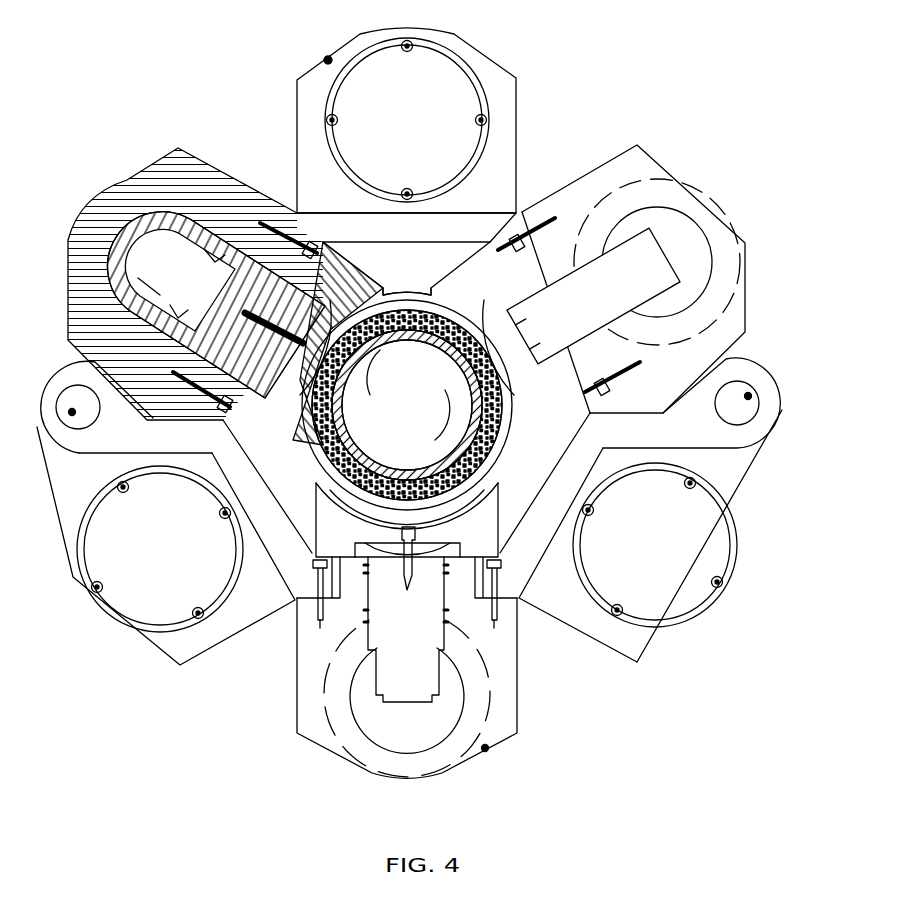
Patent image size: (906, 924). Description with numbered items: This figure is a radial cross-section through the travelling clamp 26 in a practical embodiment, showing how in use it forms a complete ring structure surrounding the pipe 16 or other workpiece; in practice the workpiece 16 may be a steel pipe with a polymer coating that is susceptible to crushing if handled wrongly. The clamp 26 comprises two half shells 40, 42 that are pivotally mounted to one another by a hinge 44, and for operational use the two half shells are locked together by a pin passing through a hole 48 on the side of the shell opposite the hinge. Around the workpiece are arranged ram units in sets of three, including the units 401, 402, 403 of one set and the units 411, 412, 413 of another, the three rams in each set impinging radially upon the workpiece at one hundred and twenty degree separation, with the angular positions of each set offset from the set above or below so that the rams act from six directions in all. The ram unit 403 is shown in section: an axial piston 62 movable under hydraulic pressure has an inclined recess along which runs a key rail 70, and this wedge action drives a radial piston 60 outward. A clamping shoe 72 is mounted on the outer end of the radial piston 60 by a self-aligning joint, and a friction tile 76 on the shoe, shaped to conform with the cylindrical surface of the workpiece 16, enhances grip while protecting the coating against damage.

The pipe 16 is at (465, 380).
The clamp 26 is at (640, 705).
The half shell 40 is at (725, 462).
The half shell 42 is at (458, 225).
The hinge 44 is at (750, 396).
The hole 48 is at (75, 412).
The radial piston 60 is at (130, 185).
The axial piston 62 is at (95, 288).
The key rail 70 is at (160, 262).
The clamping shoe 72 is at (298, 450).
The friction tile 76 is at (390, 272).
The ram unit 401 is at (300, 726).
The ram unit 402 is at (748, 268).
The ram unit 403 is at (198, 160).
The ram unit 411 is at (165, 660).
The ram unit 412 is at (632, 660).
The ram unit 413 is at (300, 100).